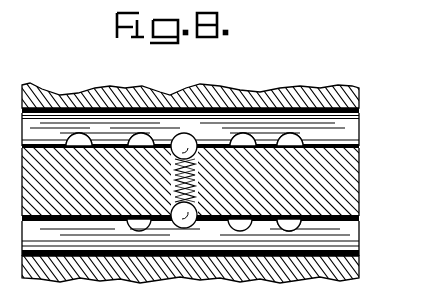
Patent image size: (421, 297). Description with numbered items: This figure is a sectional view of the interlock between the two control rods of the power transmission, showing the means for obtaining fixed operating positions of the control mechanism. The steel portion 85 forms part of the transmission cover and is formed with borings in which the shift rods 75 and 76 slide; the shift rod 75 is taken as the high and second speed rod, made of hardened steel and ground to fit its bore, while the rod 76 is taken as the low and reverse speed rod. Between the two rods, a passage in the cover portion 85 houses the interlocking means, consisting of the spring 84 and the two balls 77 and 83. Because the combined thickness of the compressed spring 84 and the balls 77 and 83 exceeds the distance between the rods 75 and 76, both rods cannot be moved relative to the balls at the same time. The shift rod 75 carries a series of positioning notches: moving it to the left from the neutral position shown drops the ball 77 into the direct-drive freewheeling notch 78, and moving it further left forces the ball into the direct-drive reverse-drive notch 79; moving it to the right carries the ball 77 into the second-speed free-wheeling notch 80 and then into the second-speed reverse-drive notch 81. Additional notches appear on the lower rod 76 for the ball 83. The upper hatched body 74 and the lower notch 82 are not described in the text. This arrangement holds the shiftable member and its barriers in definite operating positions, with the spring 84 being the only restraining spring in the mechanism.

The upper hatched body layer 74 is at (341, 104).
The shift rod 75 is at (350, 128).
The shift rod 76 is at (347, 236).
The ball 77 is at (185, 144).
The positioning notch 78 is at (245, 138).
The notch 79 is at (291, 138).
The notch 80 is at (142, 138).
The notch 81 is at (81, 137).
The lower dome projection 82 is at (290, 226).
The ball 83 is at (185, 220).
The spring 84 is at (205, 141).
The portion of the transmission cover 85 is at (340, 184).